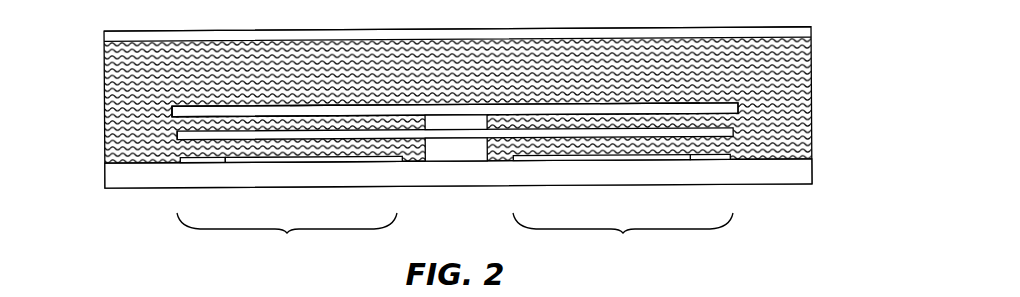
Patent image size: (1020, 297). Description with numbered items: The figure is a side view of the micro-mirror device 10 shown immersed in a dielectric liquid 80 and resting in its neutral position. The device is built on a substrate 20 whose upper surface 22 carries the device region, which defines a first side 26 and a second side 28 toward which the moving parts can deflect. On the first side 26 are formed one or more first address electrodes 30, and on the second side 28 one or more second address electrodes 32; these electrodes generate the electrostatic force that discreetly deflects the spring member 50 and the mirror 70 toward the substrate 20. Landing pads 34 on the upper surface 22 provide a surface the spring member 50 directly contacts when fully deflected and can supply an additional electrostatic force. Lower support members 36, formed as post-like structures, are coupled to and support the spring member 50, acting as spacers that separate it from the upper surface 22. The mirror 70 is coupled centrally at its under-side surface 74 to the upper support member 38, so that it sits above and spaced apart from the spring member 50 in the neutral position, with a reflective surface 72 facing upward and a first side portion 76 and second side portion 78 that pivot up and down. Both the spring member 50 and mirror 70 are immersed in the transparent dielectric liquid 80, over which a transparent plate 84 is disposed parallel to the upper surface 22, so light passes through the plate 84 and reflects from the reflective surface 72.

The micro-mirror device 10 is at (86, 91).
The substrate 20 is at (795, 172).
The upper surface 22 is at (788, 158).
The first side 26 is at (623, 238).
The second side 28 is at (287, 238).
The first address electrode 30 is at (612, 152).
The second address electrode 32 is at (298, 152).
The landing pad 34 is at (182, 152).
The lower support member 36 is at (463, 150).
The upper support member 38 is at (473, 126).
The spring member 50 is at (754, 131).
The mirror 70 is at (752, 107).
The reflective surface 72 is at (223, 100).
The under-side surface 74 is at (173, 123).
The first side portion 76 is at (636, 95).
The second side portion 78 is at (315, 97).
The dielectric liquid 80 is at (793, 60).
The plate 84 is at (808, 32).